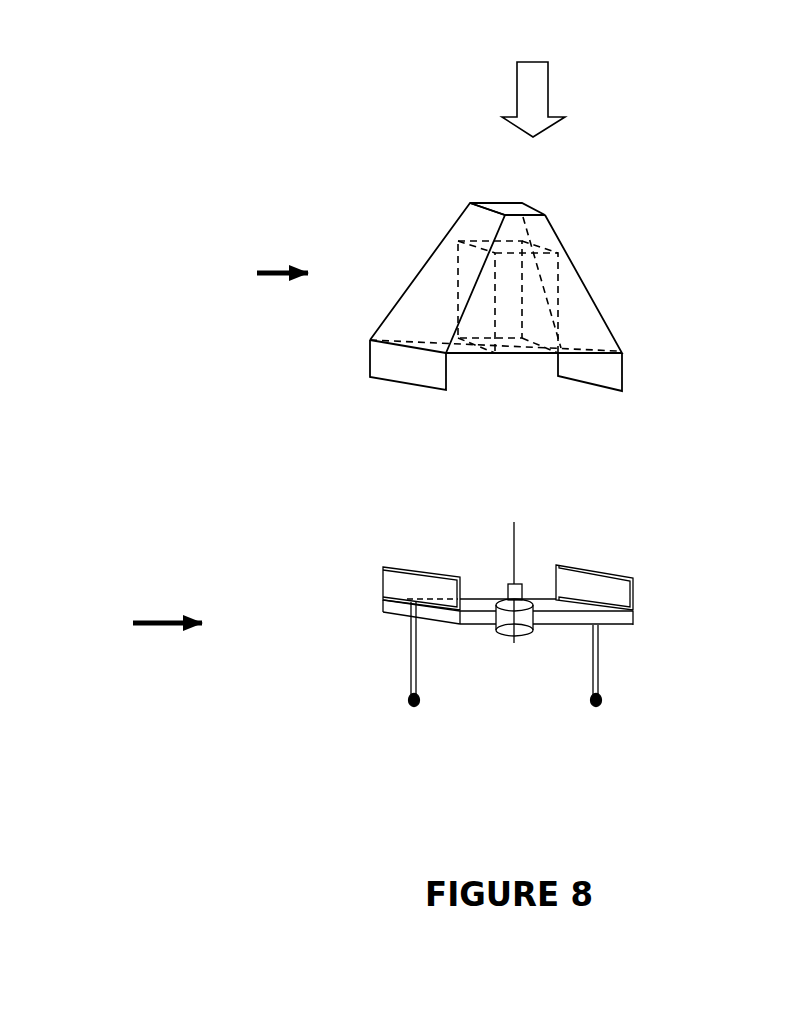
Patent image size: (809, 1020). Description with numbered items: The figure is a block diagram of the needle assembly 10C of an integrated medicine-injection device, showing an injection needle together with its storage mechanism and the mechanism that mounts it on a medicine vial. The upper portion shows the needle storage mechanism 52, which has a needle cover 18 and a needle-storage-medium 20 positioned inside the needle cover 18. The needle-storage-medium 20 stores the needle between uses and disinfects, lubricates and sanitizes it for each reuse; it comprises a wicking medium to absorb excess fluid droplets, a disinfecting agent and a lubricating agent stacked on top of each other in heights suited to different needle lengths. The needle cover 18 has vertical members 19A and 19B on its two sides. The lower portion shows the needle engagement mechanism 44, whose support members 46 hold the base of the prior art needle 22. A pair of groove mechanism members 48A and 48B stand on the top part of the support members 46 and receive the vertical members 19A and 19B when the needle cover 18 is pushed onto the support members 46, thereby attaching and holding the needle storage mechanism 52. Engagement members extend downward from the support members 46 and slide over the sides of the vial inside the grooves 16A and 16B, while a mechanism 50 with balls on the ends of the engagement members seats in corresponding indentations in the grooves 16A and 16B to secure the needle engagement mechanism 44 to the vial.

The needle assembly 10C is at (558, 86).
The needle storage mechanism 52 is at (290, 257).
The needle cover 18 is at (583, 297).
The needle-storage-medium 20 is at (495, 298).
The vertical member 19A is at (370, 383).
The vertical member 19B is at (622, 377).
The needle engagement mechanism 44 is at (155, 607).
The needle 22 is at (535, 557).
The support members 46 is at (555, 623).
The groove mechanism member 48A is at (372, 582).
The groove mechanism member 48B is at (635, 595).
The groove 16A is at (406, 668).
The groove 16B is at (600, 682).
The ball mechanism 50 is at (422, 713).